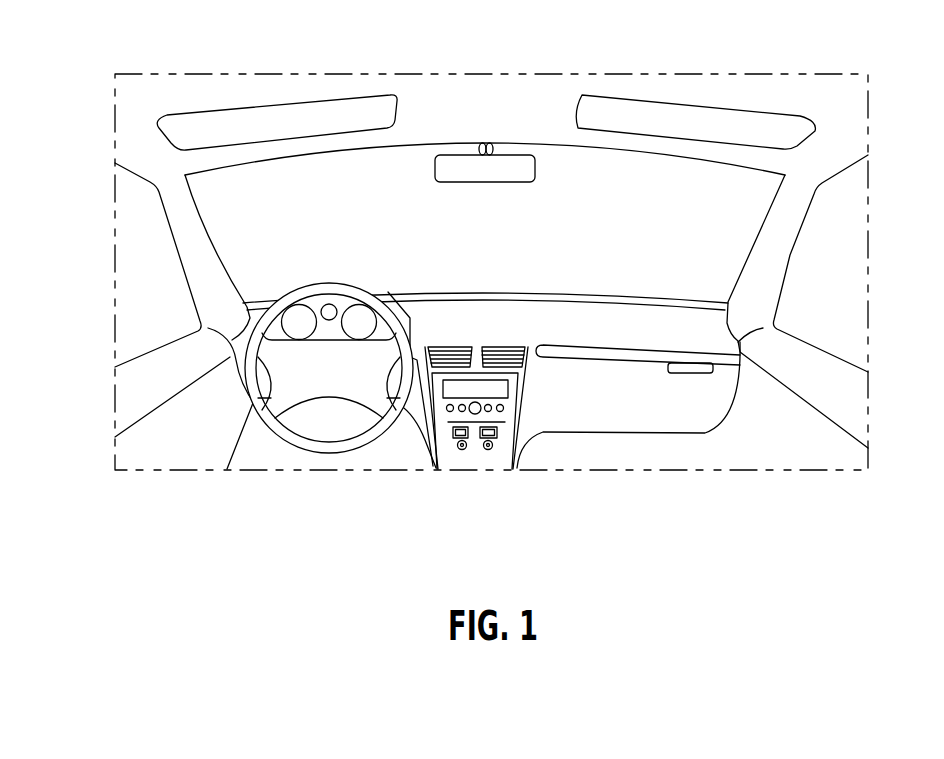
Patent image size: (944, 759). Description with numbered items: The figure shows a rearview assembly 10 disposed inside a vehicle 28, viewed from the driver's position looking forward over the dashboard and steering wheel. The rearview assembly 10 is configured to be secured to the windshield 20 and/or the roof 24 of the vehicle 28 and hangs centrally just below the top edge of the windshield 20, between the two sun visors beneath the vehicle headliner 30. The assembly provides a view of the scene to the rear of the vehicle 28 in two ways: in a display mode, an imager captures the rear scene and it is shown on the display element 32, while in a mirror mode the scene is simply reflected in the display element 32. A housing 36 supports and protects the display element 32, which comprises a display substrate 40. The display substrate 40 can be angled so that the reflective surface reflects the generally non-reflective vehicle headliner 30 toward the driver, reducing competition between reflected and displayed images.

The rearview assembly 10 is at (547, 163).
The windshield 20 is at (240, 238).
The roof 24 is at (437, 122).
The vehicle 28 is at (157, 167).
The vehicle headliner 30 is at (545, 123).
The display element 32 is at (485, 177).
The housing 36 is at (513, 183).
The display substrate 40 is at (455, 173).